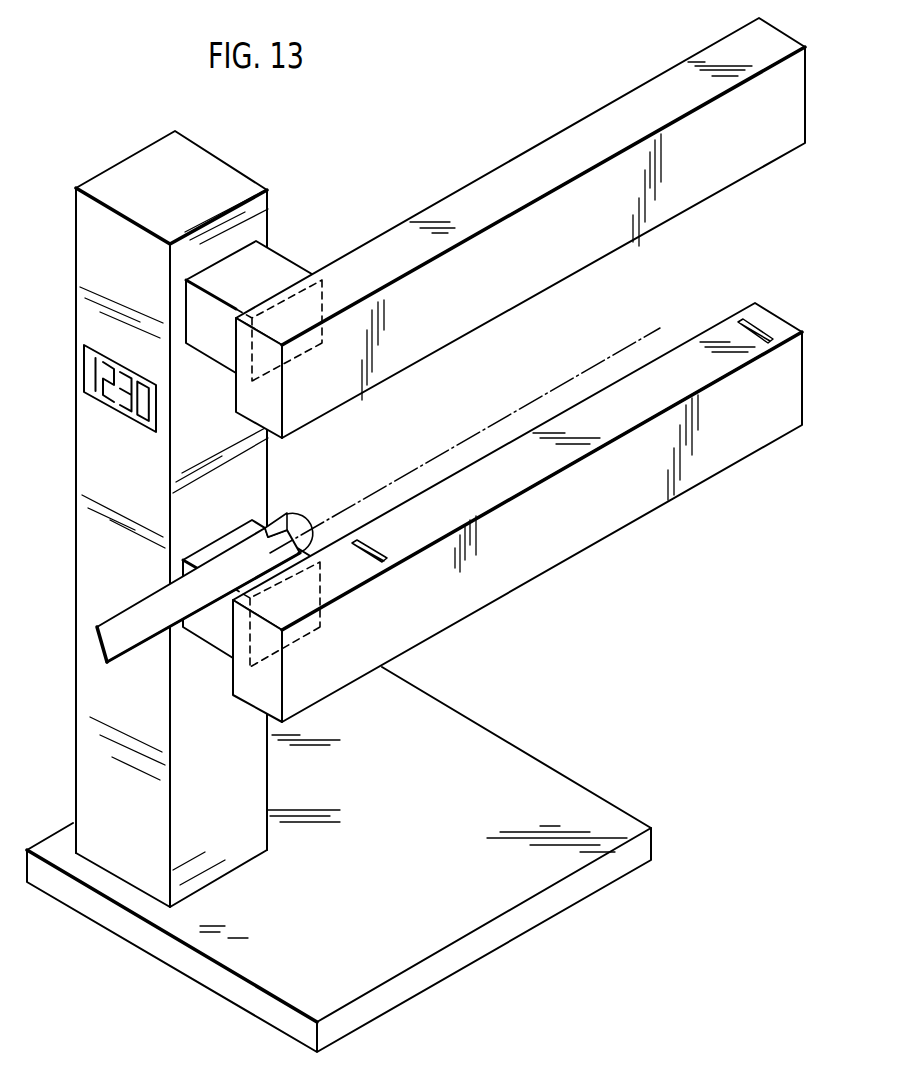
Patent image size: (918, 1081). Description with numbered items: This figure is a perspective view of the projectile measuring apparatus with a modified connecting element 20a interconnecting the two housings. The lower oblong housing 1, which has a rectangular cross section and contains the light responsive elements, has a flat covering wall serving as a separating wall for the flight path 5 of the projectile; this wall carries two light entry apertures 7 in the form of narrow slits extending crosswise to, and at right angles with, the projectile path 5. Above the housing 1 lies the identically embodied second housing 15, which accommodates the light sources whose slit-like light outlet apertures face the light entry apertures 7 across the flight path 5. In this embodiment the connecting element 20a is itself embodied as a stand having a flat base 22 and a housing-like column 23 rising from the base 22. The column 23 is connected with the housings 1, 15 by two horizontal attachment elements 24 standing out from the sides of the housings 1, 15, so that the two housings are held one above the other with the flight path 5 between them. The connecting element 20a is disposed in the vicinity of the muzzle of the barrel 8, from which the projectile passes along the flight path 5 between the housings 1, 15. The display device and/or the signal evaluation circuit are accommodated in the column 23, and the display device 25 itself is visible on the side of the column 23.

The housing 1 is at (610, 522).
The flight path 5 is at (428, 457).
The light entry apertures 7 is at (374, 548).
The barrel 8 is at (143, 628).
The second housing 15 is at (538, 167).
The connecting element 20a is at (268, 222).
The flat base 22 is at (540, 783).
The column 23 is at (90, 540).
The horizontal attachment elements 24 is at (290, 272).
The display device 25 is at (90, 397).